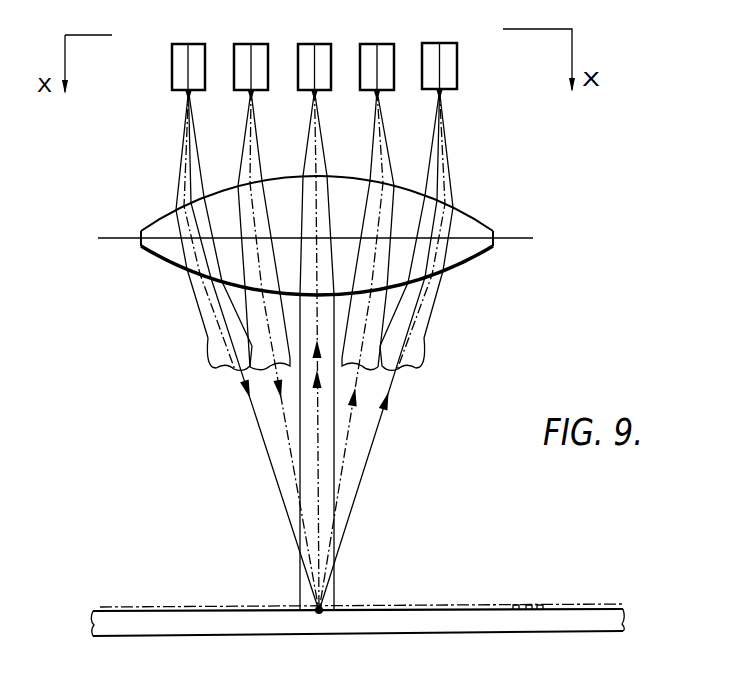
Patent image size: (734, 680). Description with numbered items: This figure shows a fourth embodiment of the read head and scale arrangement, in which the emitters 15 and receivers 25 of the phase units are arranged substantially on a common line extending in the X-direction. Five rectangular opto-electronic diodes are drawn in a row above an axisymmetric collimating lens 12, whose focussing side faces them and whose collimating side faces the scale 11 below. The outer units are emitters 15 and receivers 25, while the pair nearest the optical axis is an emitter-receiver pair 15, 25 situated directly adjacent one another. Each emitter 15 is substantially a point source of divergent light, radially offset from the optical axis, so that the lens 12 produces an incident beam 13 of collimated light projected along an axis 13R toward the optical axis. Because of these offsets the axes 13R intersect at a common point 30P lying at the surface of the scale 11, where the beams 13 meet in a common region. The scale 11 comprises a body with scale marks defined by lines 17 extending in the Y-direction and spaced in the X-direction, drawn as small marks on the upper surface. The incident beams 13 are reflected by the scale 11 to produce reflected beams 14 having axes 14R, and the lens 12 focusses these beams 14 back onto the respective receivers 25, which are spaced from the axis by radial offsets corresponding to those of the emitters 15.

The scale 11 is at (585, 607).
The collimating lens 12 is at (476, 213).
The incident beam 13 is at (208, 338).
The axis of incident beam 13R is at (257, 421).
The reflected beam 14 is at (424, 337).
The axis of reflected beam 14R is at (377, 433).
The light emitter 15 is at (201, 44).
The scale mark lines 17 is at (520, 605).
The light receiver 25 is at (428, 43).
The common point 30P is at (322, 609).